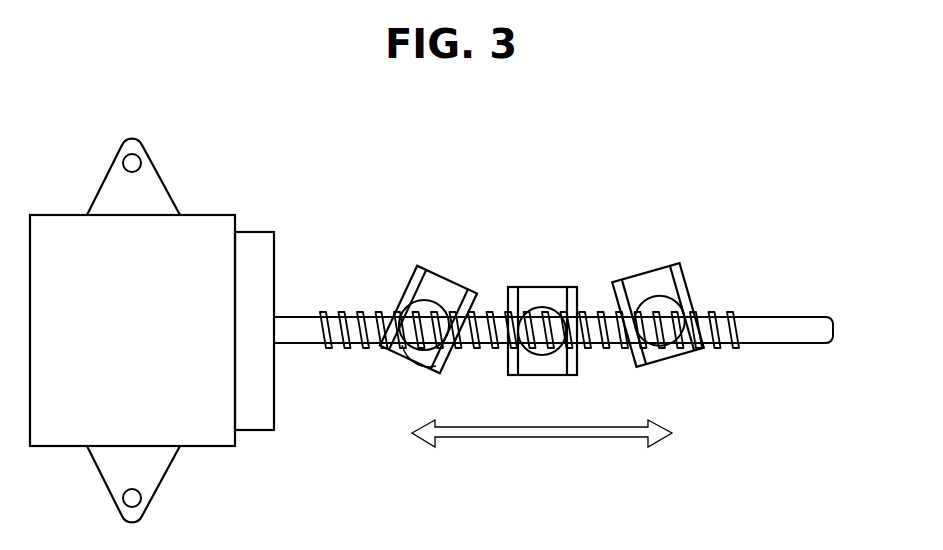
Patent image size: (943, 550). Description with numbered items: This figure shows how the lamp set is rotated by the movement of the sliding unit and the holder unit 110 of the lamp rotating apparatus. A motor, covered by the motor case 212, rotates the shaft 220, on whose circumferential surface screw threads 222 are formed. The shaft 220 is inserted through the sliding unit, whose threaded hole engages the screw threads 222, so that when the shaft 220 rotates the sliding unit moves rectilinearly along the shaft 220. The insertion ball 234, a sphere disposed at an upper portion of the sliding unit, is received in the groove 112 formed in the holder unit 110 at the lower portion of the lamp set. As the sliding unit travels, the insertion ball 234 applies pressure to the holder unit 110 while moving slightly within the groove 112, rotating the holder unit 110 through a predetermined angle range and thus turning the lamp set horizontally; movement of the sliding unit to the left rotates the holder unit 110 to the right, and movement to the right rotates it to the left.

The holder unit 110 is at (410, 277).
The groove 112 is at (440, 275).
The motor case 212 is at (193, 238).
The shaft 220 is at (767, 325).
The screw threads 222 is at (322, 343).
The insertion ball 234 is at (426, 348).